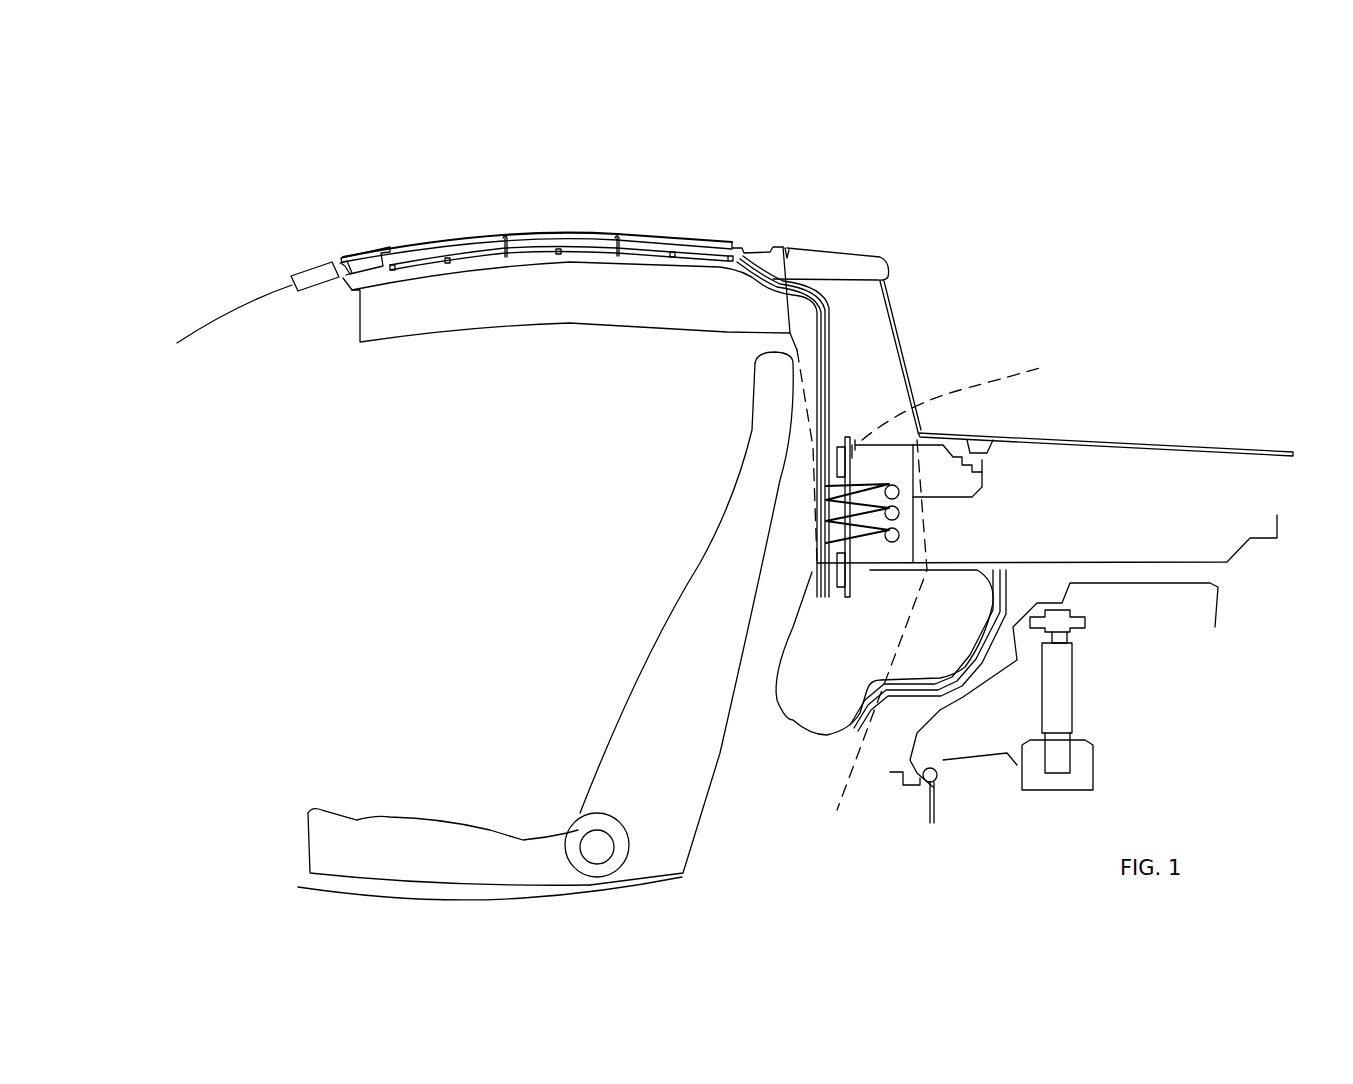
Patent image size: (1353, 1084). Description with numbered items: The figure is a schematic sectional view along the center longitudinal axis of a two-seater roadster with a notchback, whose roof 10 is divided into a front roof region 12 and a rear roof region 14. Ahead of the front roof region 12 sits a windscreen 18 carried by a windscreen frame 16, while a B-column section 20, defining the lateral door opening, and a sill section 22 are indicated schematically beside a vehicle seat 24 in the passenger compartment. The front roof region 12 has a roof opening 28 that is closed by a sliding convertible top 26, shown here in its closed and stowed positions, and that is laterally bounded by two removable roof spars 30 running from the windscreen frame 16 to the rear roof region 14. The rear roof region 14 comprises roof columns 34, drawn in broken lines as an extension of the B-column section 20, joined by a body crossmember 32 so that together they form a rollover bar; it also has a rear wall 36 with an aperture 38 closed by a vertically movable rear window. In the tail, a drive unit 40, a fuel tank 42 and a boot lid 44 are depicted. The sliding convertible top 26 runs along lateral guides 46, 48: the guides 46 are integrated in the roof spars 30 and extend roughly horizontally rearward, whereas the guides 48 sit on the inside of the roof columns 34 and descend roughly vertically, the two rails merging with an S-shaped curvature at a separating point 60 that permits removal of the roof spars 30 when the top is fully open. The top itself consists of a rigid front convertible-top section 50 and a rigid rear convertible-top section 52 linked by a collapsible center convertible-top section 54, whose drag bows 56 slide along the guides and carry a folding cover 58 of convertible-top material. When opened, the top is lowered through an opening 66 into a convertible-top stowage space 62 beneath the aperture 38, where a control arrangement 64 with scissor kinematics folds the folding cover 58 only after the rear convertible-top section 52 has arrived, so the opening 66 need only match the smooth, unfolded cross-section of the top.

The roof 10 is at (864, 168).
The front roof region 12 is at (540, 158).
The rear roof region 14 is at (944, 256).
The windscreen frame 16 is at (307, 265).
The windscreen 18 is at (220, 318).
The B-column section 20 is at (772, 734).
The sill section 22 is at (520, 900).
The vehicle seat 24 is at (670, 623).
The sliding convertible top 26 is at (623, 185).
The roof opening 28 is at (537, 250).
The roof spar 30 is at (477, 307).
The body crossmember 32 is at (798, 260).
The roof column 34 is at (948, 578).
The rear wall 36 is at (930, 326).
The aperture 38 is at (905, 370).
The drive unit 40 is at (1160, 644).
The fuel tank 42 is at (848, 669).
The boot lid 44 is at (1203, 437).
The lateral guide 46 is at (595, 262).
The lateral guide 48 is at (823, 358).
The front convertible-top section 50 is at (370, 253).
The rear convertible-top section 52 is at (748, 247).
The center convertible-top section 54 is at (563, 216).
The drag bow 56 is at (507, 236).
The folding cover 58 is at (515, 237).
The separating point 60 is at (790, 290).
The convertible-top stowage space 62 is at (928, 507).
The control arrangement 64 is at (563, 242).
The opening 66 is at (839, 430).